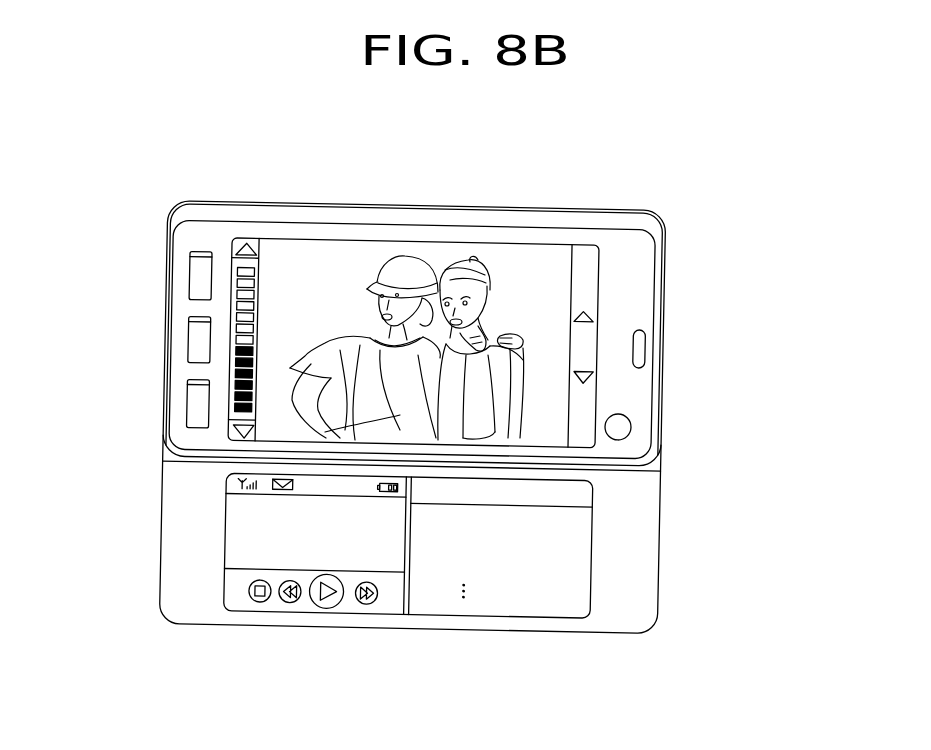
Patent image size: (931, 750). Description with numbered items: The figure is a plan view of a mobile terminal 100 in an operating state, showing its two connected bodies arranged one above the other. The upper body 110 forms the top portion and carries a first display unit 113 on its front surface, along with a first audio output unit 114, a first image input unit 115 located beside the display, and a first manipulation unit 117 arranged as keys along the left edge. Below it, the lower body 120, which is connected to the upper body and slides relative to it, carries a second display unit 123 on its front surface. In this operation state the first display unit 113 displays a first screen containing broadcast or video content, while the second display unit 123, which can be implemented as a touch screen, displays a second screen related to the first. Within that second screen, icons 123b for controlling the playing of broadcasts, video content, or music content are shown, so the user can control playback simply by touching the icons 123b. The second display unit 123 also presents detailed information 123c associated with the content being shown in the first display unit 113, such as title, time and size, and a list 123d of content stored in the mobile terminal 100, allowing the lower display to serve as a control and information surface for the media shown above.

The mobile terminal 100 is at (702, 202).
The upper body 110 is at (165, 310).
The first display unit 113 is at (563, 288).
The first audio output unit 114 is at (640, 348).
The first image input unit 115 is at (622, 424).
The first manipulation unit 117 is at (201, 268).
The lower body 120 is at (158, 527).
The second display unit 123 is at (593, 548).
The icons 123b is at (352, 602).
The detailed information 123c is at (230, 547).
The list 123d is at (493, 603).